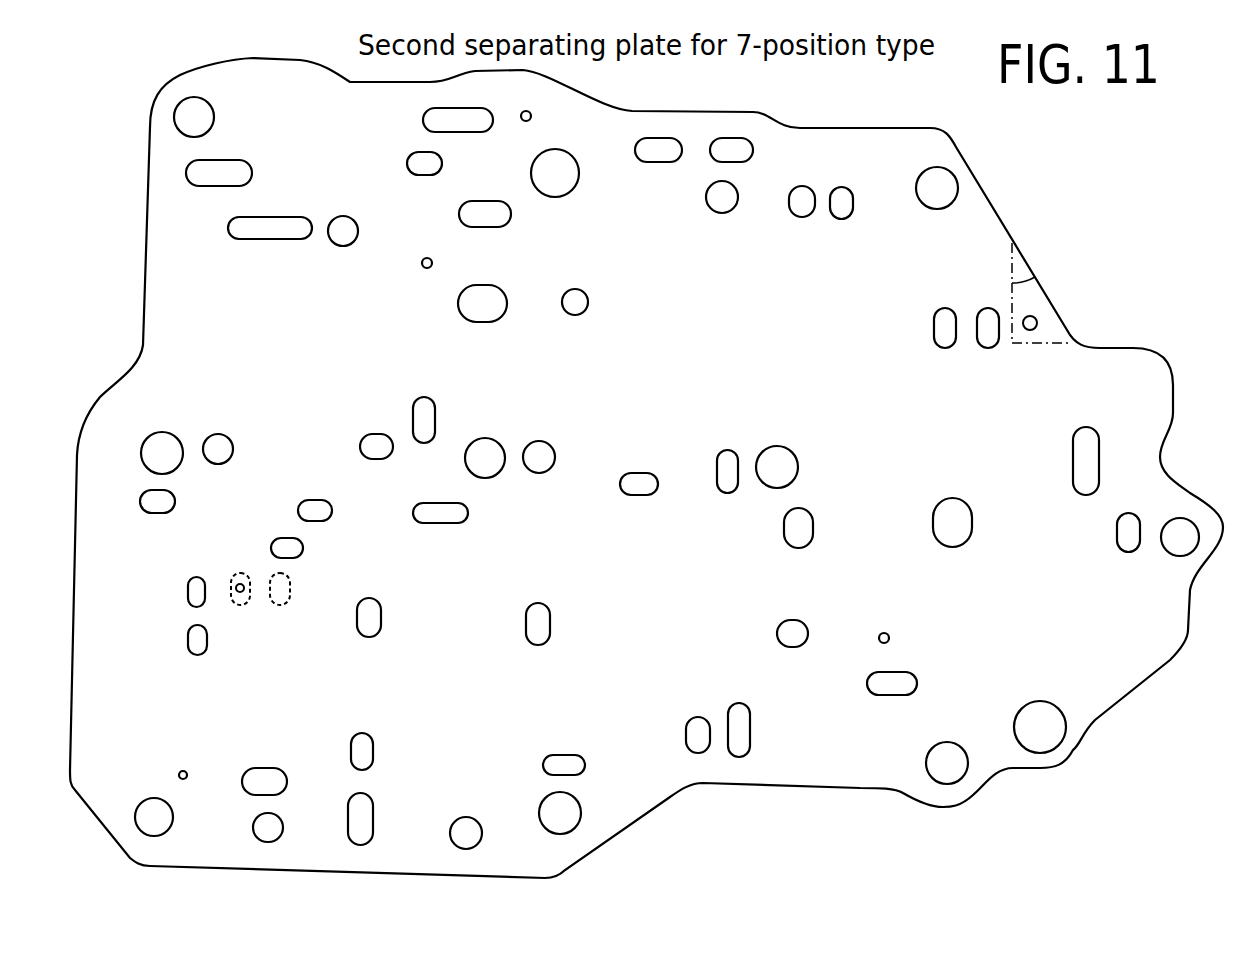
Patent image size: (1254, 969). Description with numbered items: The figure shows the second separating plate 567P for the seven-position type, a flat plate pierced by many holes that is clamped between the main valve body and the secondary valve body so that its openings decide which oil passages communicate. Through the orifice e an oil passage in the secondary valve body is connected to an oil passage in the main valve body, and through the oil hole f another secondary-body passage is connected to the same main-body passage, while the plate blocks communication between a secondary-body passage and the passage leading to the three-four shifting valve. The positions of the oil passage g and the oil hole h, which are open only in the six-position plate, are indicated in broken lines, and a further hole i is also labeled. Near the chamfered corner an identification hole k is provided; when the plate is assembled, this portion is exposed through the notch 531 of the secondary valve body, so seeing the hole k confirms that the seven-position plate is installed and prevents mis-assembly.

The second separating plate for the 7-position type 567P is at (1003, 226).
The notch of the secondary valve body 531 is at (1033, 275).
The identification hole k is at (1038, 323).
The orifice e is at (240, 583).
The oil hole f is at (188, 593).
The oil passage g is at (250, 608).
The oil hole h is at (287, 608).
The hole i is at (305, 548).